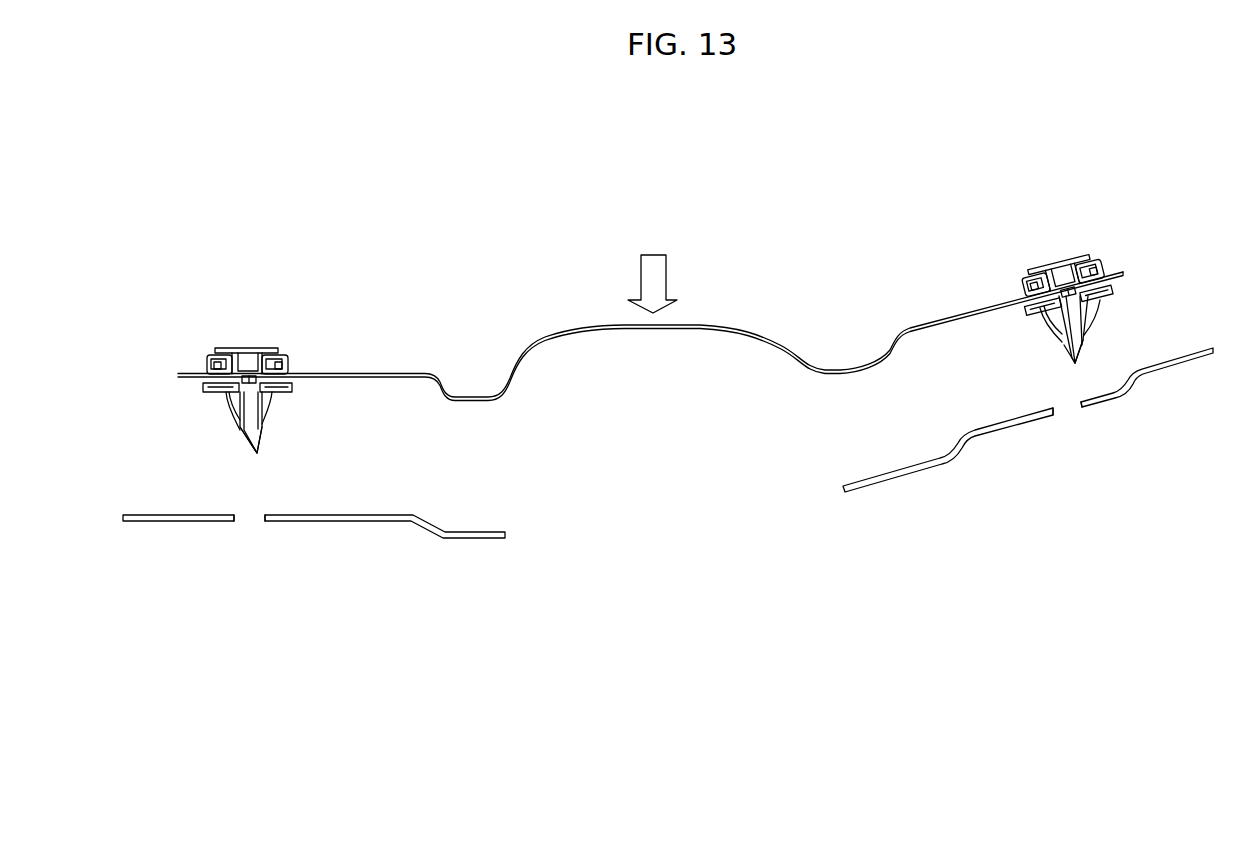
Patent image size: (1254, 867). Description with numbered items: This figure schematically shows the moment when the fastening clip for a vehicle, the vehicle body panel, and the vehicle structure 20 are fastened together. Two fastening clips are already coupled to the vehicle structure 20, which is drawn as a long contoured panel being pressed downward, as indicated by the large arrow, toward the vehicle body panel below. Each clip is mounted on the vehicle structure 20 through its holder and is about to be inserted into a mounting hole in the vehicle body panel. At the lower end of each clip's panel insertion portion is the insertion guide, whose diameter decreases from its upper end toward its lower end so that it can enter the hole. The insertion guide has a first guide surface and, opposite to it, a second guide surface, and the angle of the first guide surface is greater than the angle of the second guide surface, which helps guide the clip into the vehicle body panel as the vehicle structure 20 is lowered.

The vehicle structure 20 is at (772, 336).